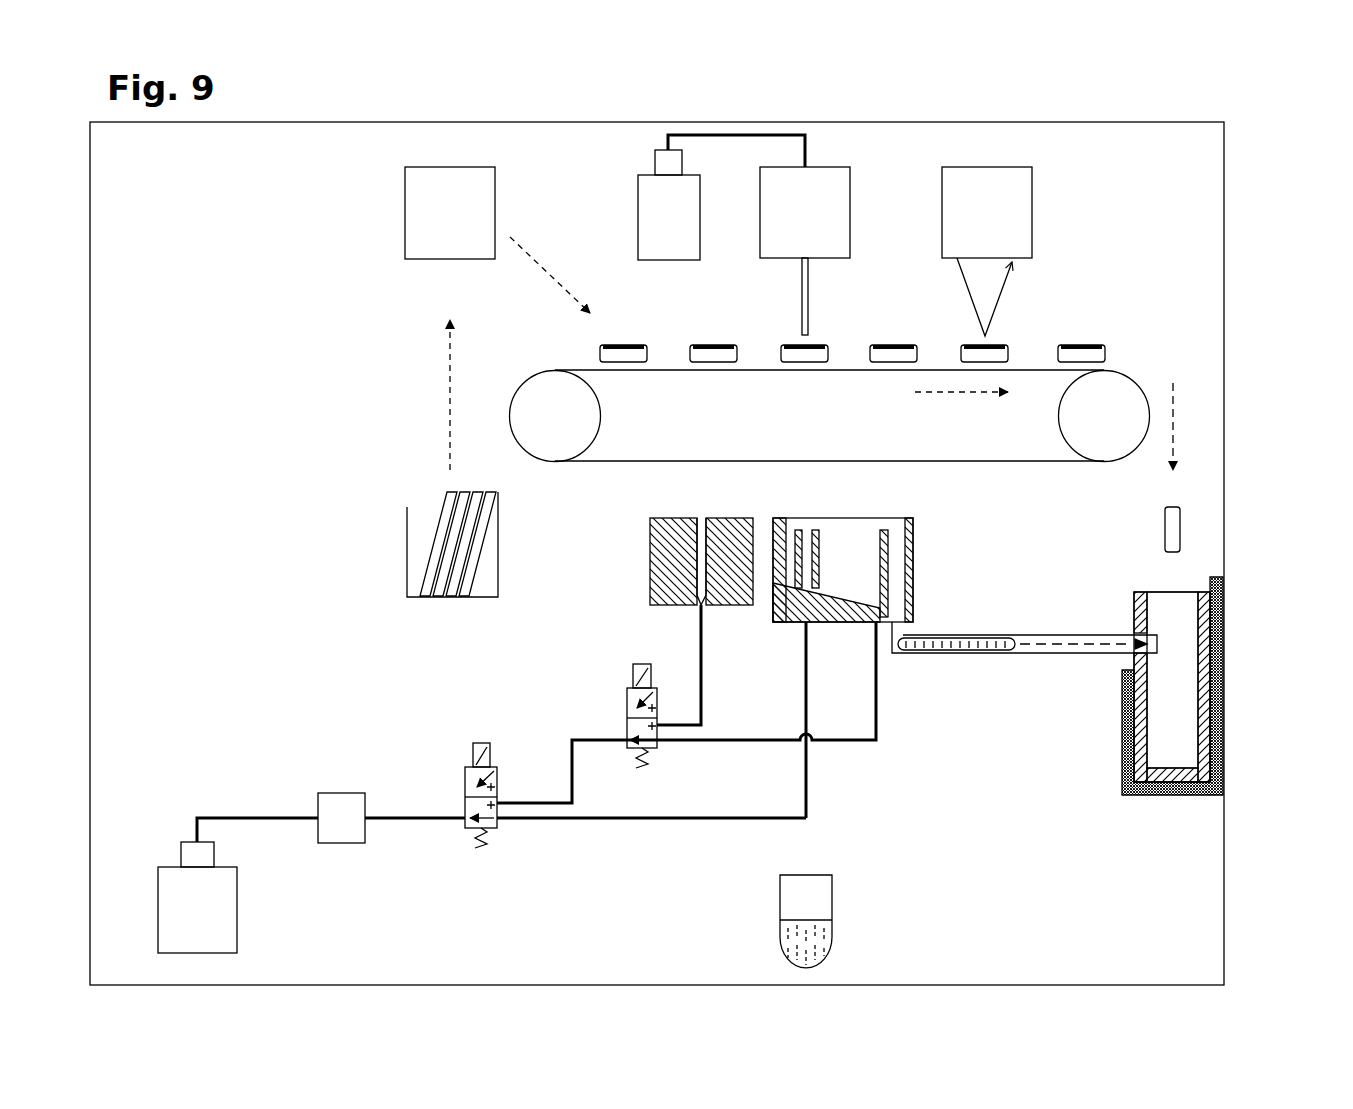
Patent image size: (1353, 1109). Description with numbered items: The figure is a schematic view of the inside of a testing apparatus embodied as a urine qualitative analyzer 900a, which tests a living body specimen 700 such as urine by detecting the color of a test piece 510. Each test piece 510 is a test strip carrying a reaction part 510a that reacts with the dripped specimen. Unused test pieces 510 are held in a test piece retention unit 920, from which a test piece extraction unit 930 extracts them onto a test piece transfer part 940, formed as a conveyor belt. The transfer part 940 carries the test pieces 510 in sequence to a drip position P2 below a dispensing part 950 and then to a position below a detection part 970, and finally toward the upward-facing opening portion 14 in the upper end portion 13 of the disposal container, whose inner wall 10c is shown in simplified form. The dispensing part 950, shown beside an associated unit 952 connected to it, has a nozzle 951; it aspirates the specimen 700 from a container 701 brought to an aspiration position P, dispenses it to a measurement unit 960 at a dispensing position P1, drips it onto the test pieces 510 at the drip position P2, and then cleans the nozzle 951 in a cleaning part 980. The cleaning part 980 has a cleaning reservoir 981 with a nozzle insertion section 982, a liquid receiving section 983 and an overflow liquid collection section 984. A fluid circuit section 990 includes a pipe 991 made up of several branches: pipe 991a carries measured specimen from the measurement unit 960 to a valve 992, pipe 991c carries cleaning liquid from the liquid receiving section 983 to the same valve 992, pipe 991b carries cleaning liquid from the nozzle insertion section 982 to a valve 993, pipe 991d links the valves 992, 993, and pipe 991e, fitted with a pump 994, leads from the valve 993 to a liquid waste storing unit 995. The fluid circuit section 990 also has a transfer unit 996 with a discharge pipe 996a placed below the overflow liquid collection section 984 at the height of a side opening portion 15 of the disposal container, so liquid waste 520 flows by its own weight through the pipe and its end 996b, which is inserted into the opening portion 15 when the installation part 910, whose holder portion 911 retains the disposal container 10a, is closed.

The urine qualitative analyzer 900a is at (1224, 170).
The test piece extraction unit 930 is at (405, 199).
The cutting unit 952 is at (648, 194).
The dispensing part 950 is at (845, 190).
The nozzle 951 is at (800, 301).
The drip position P2 is at (800, 337).
The detection part 970 is at (1020, 191).
The test piece transfer part 940 is at (1124, 357).
The test piece 510 is at (646, 352).
The reaction part 510a is at (600, 348).
The test piece retention unit 920 is at (407, 547).
The dispensing position P1 is at (700, 510).
The measurement unit 960 is at (650, 565).
The cleaning part 980 is at (922, 572).
The nozzle insertion section 982 is at (802, 545).
The liquid receiving section 983 is at (848, 568).
The overflow liquid collection section 984 is at (888, 565).
The cleaning reservoir 981 is at (840, 624).
The liquid waste 520 is at (946, 635).
The transfer unit 996 is at (990, 664).
The discharge pipe 996a is at (1023, 654).
The end of discharge pipe 996b is at (1163, 632).
The liquid container 10a is at (1125, 590).
The upper end portion 13 is at (1141, 594).
The opening portion 14 is at (1170, 604).
The container inner wall 10c is at (1190, 628).
The opening portion 15 is at (1137, 652).
The holder portion 911 is at (1122, 730).
The installation part 910 is at (1177, 798).
The pipe 991a is at (700, 655).
The valve 992 is at (630, 688).
The pipe 991d is at (572, 740).
The pipe 991c is at (878, 713).
The pipe 991b is at (703, 823).
The pipe 991 is at (572, 838).
The valve 993 is at (465, 765).
The pump 994 is at (345, 793).
The pipe 991e is at (275, 816).
The liquid waste storing unit 995 is at (175, 878).
The aspiration position P is at (808, 868).
The living body specimen 700 is at (822, 913).
The container 701 is at (833, 940).
The fluid circuit section 990 is at (953, 781).